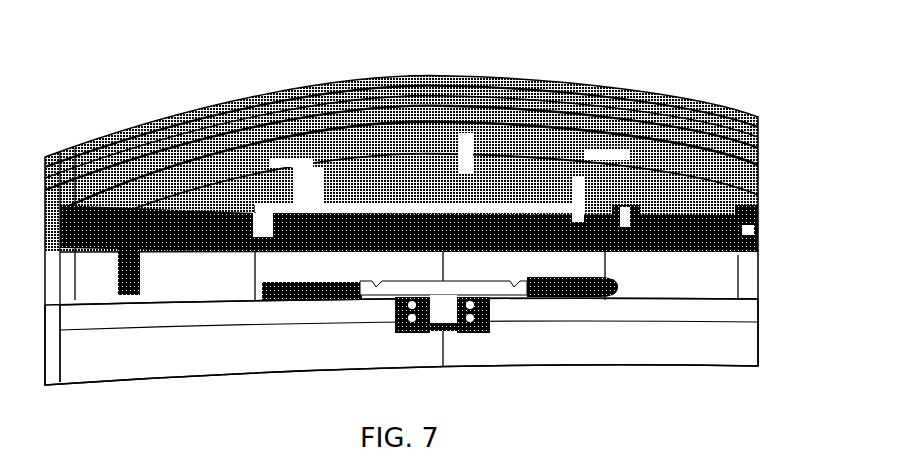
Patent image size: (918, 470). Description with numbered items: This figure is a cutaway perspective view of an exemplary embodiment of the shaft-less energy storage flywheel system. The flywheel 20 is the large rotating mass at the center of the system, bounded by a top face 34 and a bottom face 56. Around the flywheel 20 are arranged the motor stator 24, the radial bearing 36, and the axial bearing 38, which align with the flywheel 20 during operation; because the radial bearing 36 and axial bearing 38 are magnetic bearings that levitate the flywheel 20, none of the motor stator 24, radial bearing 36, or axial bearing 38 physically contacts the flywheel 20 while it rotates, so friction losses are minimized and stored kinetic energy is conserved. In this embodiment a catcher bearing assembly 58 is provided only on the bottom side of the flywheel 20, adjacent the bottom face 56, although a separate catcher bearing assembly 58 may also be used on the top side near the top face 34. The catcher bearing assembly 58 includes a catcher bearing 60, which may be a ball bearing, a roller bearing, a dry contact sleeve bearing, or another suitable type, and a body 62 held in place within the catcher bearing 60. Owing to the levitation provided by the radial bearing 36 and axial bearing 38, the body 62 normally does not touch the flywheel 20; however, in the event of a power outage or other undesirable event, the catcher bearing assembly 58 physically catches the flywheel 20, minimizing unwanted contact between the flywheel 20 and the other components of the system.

The flywheel 20 is at (738, 268).
The motor stator 24 is at (137, 218).
The top face 34 is at (746, 220).
The radial bearing 36 is at (581, 216).
The axial bearing 38 is at (625, 218).
The bottom face 56 is at (707, 278).
The catcher bearing assembly 58 is at (383, 324).
The catcher bearing 60 is at (465, 322).
The body 62 is at (487, 290).